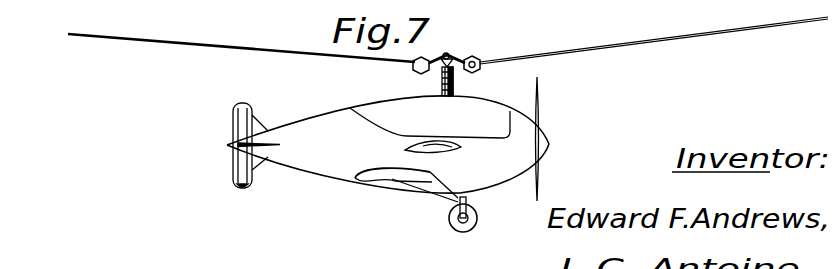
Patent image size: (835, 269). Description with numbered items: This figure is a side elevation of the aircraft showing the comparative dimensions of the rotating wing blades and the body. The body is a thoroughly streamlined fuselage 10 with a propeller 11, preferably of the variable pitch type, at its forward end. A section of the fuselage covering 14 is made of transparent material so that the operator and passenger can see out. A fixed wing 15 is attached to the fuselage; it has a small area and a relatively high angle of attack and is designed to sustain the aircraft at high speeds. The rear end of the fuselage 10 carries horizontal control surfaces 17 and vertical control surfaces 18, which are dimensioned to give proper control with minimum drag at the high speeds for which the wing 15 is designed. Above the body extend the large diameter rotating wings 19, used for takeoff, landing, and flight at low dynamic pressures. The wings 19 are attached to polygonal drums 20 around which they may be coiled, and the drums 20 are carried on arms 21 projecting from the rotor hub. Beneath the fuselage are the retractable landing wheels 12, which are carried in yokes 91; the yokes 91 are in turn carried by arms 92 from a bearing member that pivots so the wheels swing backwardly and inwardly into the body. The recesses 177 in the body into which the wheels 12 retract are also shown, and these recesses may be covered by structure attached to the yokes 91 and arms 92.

The fuselage 10 is at (325, 115).
The propeller 11 is at (540, 113).
The landing wheels 12 is at (459, 232).
The fuselage covering 14 is at (405, 96).
The fixed wing 15 is at (450, 150).
The horizontal control surfaces 17 is at (277, 148).
The recesses 177 is at (373, 185).
The vertical control surfaces 18 is at (257, 114).
The rotating wings 19 is at (188, 44).
The polygonal drums 20 is at (421, 57).
The arms 21 is at (452, 57).
The yokes 91 is at (470, 205).
The arms 92 is at (454, 200).